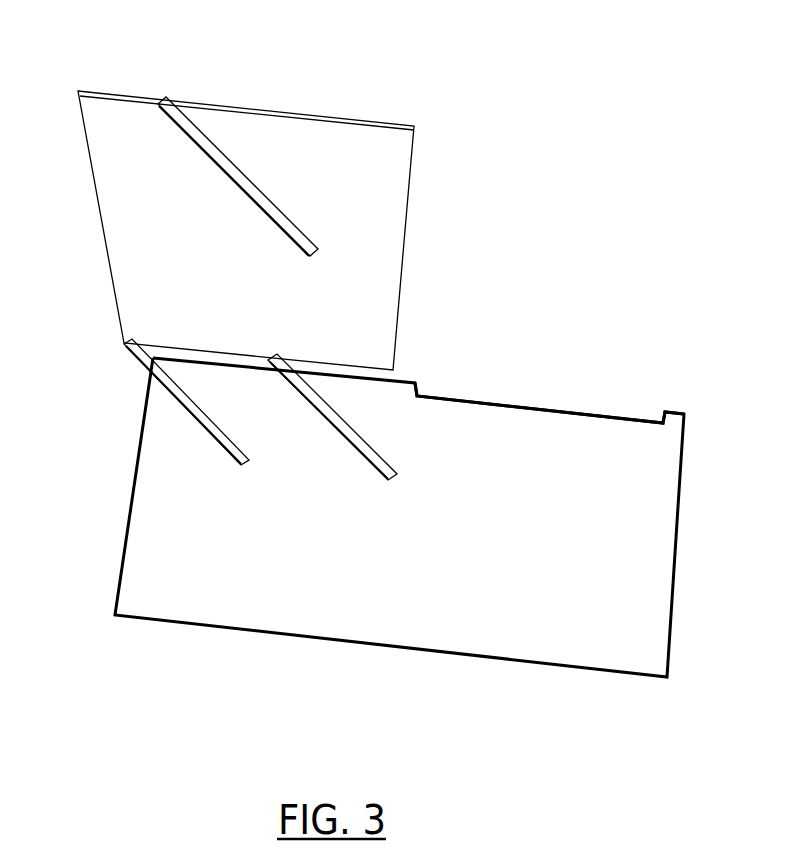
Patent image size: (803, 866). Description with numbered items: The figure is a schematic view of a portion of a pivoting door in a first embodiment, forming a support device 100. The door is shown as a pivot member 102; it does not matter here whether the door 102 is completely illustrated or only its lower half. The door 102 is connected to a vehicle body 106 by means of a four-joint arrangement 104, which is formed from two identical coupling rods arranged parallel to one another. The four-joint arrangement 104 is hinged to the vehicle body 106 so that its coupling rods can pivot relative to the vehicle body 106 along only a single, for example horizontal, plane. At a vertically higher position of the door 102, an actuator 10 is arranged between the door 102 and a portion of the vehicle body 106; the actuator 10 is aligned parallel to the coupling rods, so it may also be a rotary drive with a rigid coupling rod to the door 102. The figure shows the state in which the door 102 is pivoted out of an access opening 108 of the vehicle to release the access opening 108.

The support device 100 is at (500, 172).
The pivot member 102 is at (339, 143).
The actuator 10 is at (186, 128).
The four-joint arrangement 104 is at (310, 400).
The vehicle body 106 is at (281, 606).
The access opening 108 is at (543, 402).